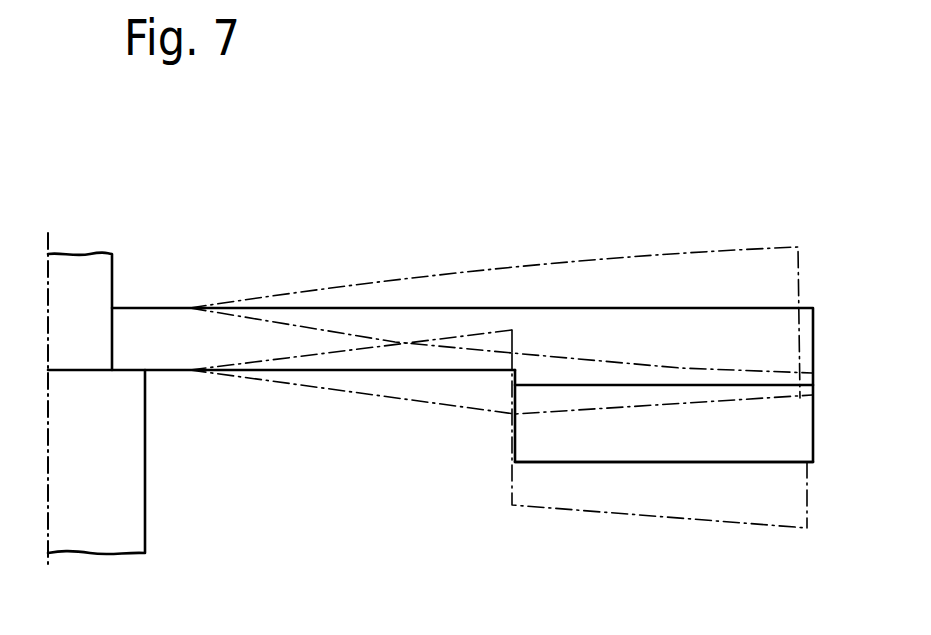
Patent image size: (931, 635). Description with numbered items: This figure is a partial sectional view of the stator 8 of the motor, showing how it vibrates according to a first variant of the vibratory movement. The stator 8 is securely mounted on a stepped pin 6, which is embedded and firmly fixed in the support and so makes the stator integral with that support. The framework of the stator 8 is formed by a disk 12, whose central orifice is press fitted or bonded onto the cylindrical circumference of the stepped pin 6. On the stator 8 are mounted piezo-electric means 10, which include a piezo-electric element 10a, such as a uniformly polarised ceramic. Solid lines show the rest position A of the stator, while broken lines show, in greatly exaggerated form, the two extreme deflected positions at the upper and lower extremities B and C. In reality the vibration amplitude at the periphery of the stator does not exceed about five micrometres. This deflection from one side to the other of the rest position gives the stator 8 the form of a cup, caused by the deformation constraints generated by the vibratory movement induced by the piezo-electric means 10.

The stepped pin 6 is at (122, 500).
The stator 8 is at (573, 288).
The piezo-electric means 10 is at (876, 401).
The piezo-electric element 10a is at (593, 435).
The disk 12 is at (360, 347).
The rest position A is at (813, 336).
The upper extreme deformed position B is at (801, 258).
The lower extreme deformed position C is at (807, 511).